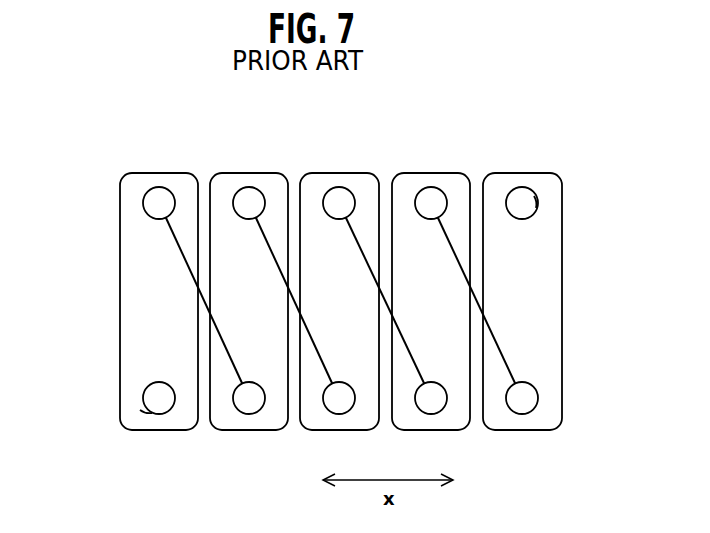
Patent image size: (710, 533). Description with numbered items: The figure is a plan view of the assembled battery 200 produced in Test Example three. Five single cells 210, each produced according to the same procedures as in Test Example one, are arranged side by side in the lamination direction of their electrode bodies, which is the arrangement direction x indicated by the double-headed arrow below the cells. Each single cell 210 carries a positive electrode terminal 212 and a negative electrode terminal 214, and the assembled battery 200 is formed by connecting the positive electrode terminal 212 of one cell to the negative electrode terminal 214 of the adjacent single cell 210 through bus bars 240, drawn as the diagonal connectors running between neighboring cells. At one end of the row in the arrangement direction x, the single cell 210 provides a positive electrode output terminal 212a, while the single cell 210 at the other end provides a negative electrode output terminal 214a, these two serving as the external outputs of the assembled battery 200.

The assembled battery 200 is at (55, 105).
The single cell 210 is at (135, 178).
The positive electrode terminal 212 is at (142, 397).
The positive electrode output terminal 212a is at (147, 410).
The negative electrode terminal 214 is at (529, 190).
The negative electrode output terminal 214a is at (538, 203).
The bus bar 240 is at (507, 362).